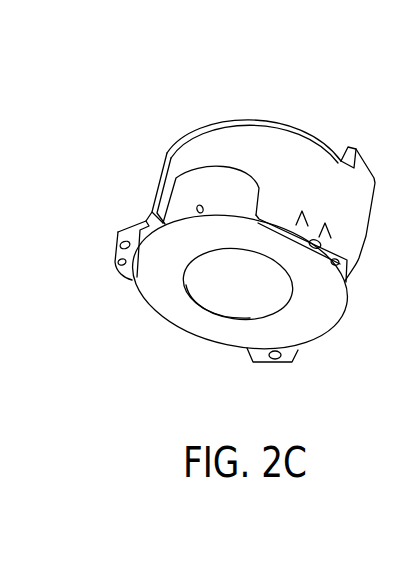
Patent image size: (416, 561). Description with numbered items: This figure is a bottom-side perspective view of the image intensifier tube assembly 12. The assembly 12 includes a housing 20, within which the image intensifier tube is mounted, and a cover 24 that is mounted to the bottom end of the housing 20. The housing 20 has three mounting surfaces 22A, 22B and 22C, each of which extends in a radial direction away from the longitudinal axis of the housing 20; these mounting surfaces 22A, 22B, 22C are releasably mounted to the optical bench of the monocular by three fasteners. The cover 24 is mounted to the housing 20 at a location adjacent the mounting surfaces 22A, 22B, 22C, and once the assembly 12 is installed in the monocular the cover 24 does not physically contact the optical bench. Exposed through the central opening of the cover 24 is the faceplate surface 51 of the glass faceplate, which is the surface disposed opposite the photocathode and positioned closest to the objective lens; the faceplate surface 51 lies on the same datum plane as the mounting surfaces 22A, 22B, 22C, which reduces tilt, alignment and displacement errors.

The image intensifier tube assembly 12 is at (156, 88).
The housing 20 is at (277, 140).
The mounting surface 22A is at (113, 248).
The mounting surface 22B is at (348, 232).
The mounting surface 22C is at (297, 358).
The cover 24 is at (184, 315).
The faceplate surface 51 is at (235, 293).